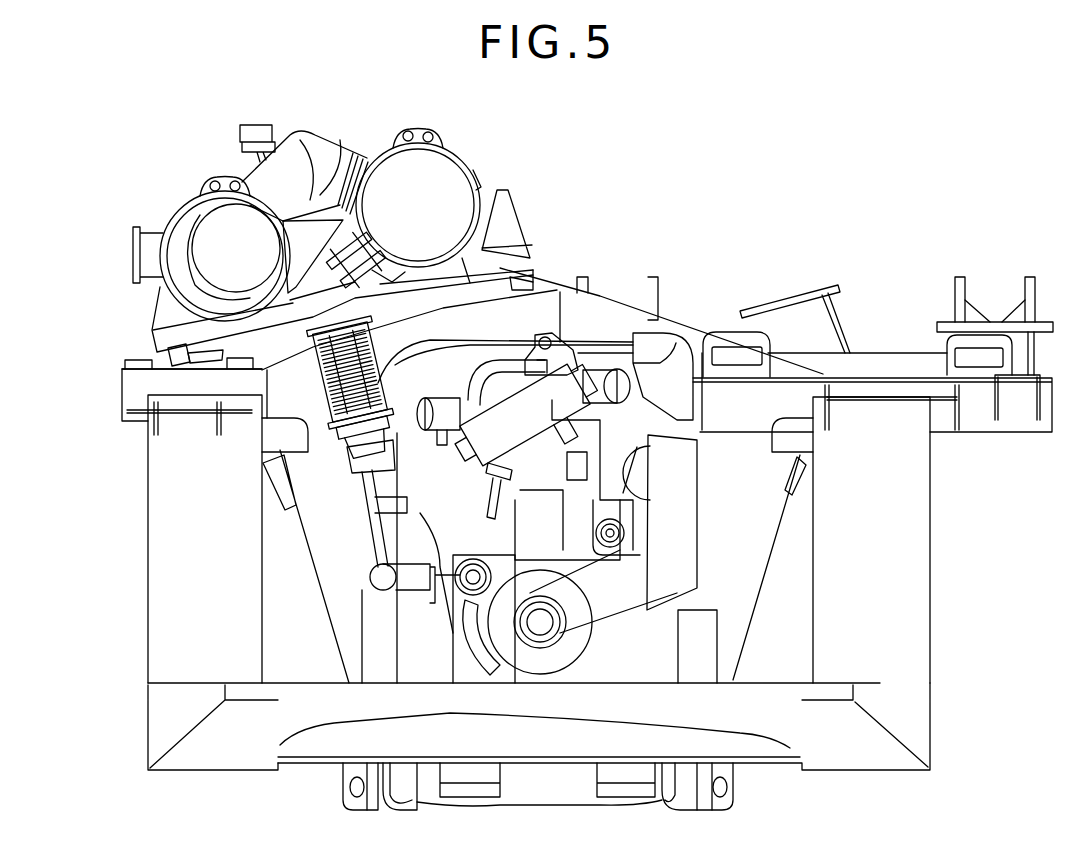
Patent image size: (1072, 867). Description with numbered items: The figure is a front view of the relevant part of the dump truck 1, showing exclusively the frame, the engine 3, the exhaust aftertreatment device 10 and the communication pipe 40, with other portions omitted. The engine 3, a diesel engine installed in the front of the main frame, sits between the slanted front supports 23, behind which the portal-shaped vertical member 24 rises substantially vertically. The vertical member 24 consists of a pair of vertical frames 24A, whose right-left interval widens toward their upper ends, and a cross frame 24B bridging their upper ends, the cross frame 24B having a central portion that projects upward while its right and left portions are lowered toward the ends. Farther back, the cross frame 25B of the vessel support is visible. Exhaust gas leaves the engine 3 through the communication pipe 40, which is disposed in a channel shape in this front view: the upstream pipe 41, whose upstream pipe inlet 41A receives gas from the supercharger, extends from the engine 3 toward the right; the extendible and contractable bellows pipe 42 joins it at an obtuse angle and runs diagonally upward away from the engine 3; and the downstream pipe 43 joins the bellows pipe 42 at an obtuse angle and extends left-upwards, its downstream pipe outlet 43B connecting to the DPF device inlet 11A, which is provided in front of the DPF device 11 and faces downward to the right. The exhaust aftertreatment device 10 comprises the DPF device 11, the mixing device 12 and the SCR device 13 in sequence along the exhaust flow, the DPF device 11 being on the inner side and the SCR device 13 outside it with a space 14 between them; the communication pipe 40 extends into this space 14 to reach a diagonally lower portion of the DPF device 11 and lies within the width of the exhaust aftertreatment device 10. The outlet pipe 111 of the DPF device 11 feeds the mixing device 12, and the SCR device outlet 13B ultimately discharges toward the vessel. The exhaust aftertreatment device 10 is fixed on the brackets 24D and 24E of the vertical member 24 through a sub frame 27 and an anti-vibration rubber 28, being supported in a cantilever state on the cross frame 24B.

The dump truck 1 is at (589, 152).
The engine 3 is at (563, 310).
The exhaust aftertreatment device 10 is at (219, 119).
The DPF device 11 is at (447, 167).
The DPF device inlet 11A is at (380, 265).
The mixing device 12 is at (312, 168).
The SCR device 13 is at (185, 230).
The SCR device outlet 13B is at (133, 255).
The space 14 is at (316, 232).
The front supports 23 is at (165, 555).
The vertical member 24 is at (671, 283).
The vertical frames 24A is at (327, 565).
The cross frame 24B is at (617, 310).
The bracket 24D is at (180, 367).
The bracket 24E is at (548, 280).
The cross frame 25B is at (890, 357).
The sub frame 27 is at (163, 330).
The anti-vibration rubber 28 is at (160, 355).
The communication pipe 40 is at (388, 368).
The upstream pipe 41 is at (360, 465).
The upstream pipe inlet 41A is at (395, 473).
The bellows pipe 42 is at (323, 370).
The downstream pipe 43 is at (320, 278).
The downstream pipe outlet 43B is at (362, 233).
The outlet pipe 111 is at (365, 160).